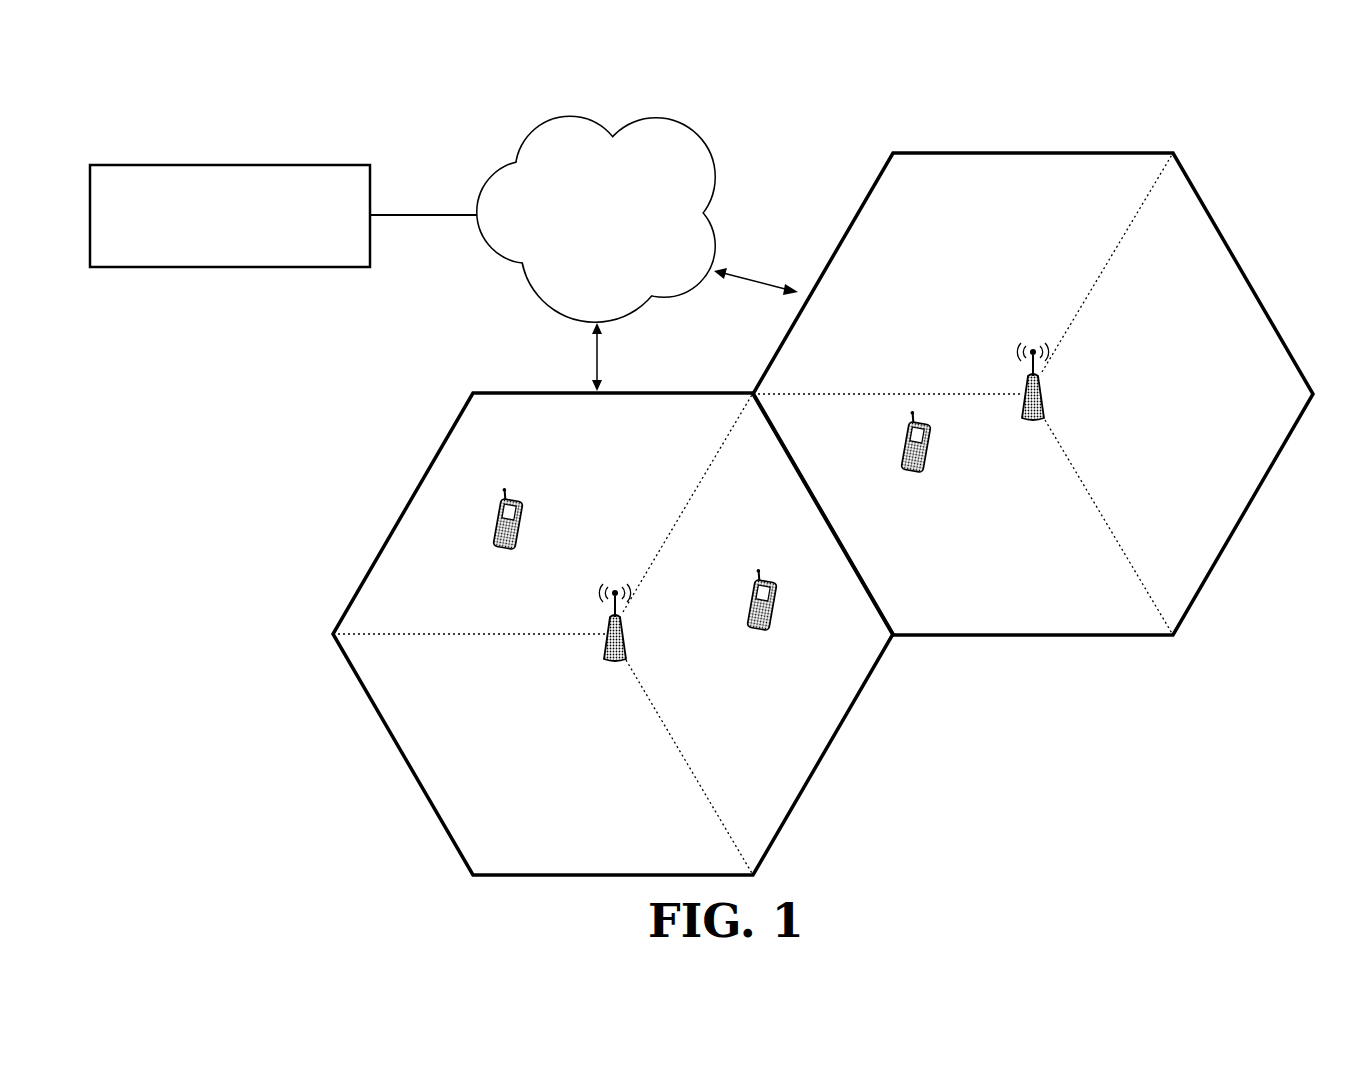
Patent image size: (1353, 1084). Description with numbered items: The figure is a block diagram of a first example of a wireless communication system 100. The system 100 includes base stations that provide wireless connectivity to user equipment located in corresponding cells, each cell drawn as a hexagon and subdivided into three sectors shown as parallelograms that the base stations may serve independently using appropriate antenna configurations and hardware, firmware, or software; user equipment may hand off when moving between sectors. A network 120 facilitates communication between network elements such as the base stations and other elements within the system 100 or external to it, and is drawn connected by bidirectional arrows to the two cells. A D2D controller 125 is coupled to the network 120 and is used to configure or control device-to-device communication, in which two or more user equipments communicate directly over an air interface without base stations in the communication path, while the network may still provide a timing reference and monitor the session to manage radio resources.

The wireless communication system 100 is at (1252, 160).
The network 120 is at (584, 236).
The D2D controller 125 is at (201, 244).